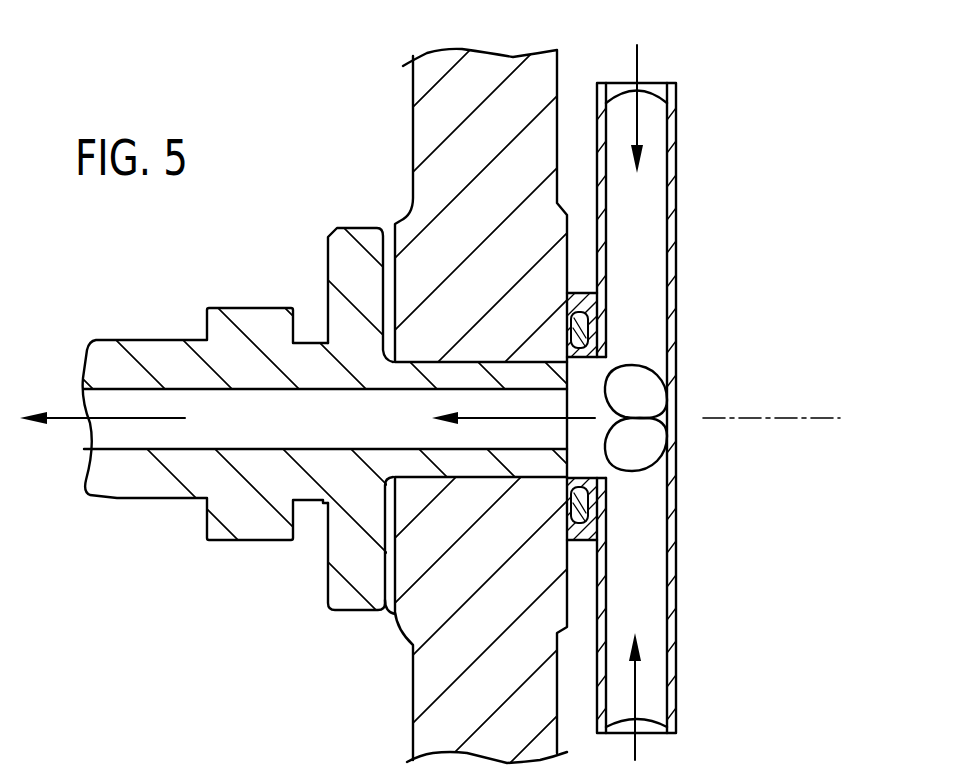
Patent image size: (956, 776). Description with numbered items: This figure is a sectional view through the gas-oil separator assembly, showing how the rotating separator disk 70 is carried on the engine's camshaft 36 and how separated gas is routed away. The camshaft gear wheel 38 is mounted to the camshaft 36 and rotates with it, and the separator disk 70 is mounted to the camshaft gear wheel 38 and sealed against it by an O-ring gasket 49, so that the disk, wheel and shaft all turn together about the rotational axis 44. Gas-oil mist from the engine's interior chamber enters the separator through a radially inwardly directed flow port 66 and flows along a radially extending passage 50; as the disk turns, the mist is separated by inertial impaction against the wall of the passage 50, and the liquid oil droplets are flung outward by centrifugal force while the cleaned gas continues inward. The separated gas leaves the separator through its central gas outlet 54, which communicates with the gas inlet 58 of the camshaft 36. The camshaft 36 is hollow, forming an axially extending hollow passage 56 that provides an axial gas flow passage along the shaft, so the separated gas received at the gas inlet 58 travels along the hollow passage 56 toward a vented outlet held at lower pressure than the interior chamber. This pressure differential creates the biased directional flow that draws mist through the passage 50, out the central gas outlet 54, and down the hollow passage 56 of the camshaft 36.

The camshaft 36 is at (161, 336).
The camshaft gear wheel 38 is at (442, 60).
The rotational axis 44 is at (778, 413).
The O-ring gasket 49 is at (575, 323).
The radially extending passage 50 is at (652, 198).
The central gas outlet 54 is at (593, 375).
The axially extending hollow passage 56 is at (100, 436).
The gas inlet 58 is at (528, 433).
The radially inwardly directed flow port 66 is at (653, 83).
The separator disk 70 is at (675, 268).